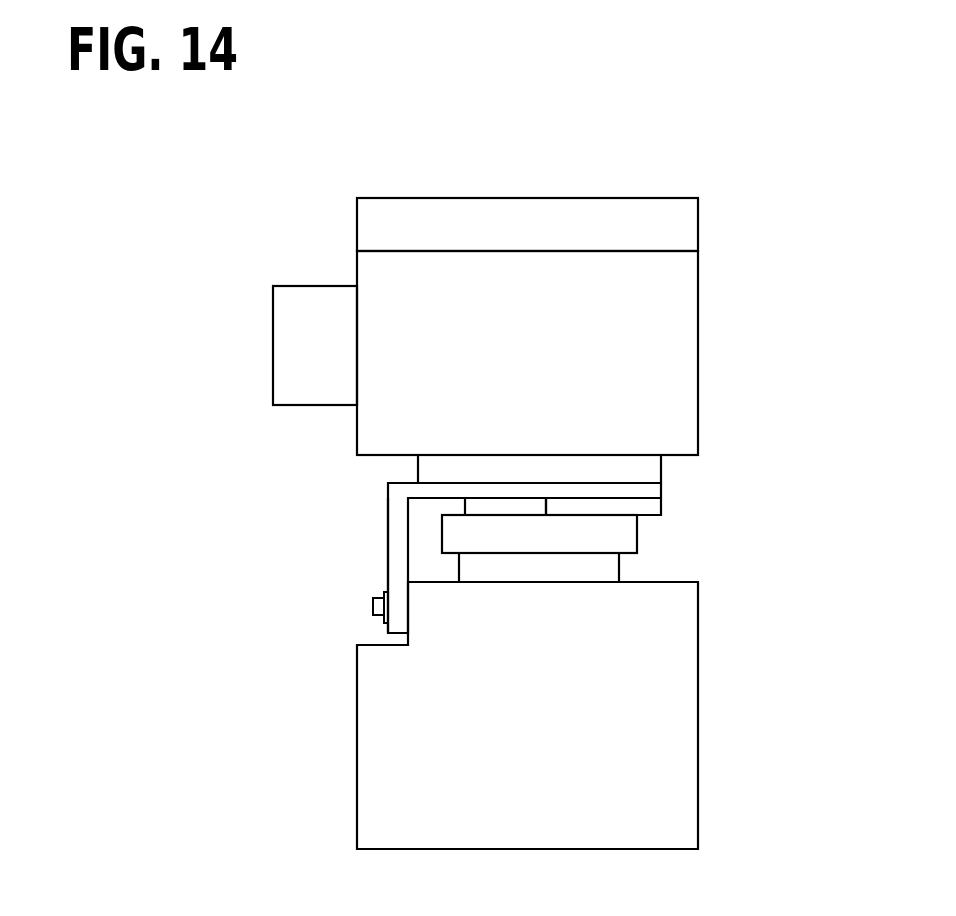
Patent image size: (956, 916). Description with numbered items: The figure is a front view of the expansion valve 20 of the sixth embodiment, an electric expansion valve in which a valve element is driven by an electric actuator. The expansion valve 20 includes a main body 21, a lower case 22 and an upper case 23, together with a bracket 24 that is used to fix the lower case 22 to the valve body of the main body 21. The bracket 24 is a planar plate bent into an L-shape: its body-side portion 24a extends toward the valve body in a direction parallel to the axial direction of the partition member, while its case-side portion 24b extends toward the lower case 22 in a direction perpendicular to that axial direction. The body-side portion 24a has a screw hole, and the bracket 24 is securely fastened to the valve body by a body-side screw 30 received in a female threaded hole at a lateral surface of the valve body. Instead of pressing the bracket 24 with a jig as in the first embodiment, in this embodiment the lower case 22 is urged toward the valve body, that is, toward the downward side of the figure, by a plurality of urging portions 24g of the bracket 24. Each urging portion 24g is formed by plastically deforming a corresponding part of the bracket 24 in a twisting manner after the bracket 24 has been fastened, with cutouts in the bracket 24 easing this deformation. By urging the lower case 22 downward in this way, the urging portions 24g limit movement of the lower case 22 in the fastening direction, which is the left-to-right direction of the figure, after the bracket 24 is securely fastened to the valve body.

The expansion valve 20 is at (539, 265).
The main body 21 is at (699, 727).
The lower case 22 is at (701, 346).
The upper case 23 is at (700, 223).
The bracket 24 is at (457, 533).
The body-side portion 24a is at (397, 572).
The case-side portion 24b is at (497, 508).
The urging portion 24g is at (610, 508).
The body-side screw 30 is at (372, 613).